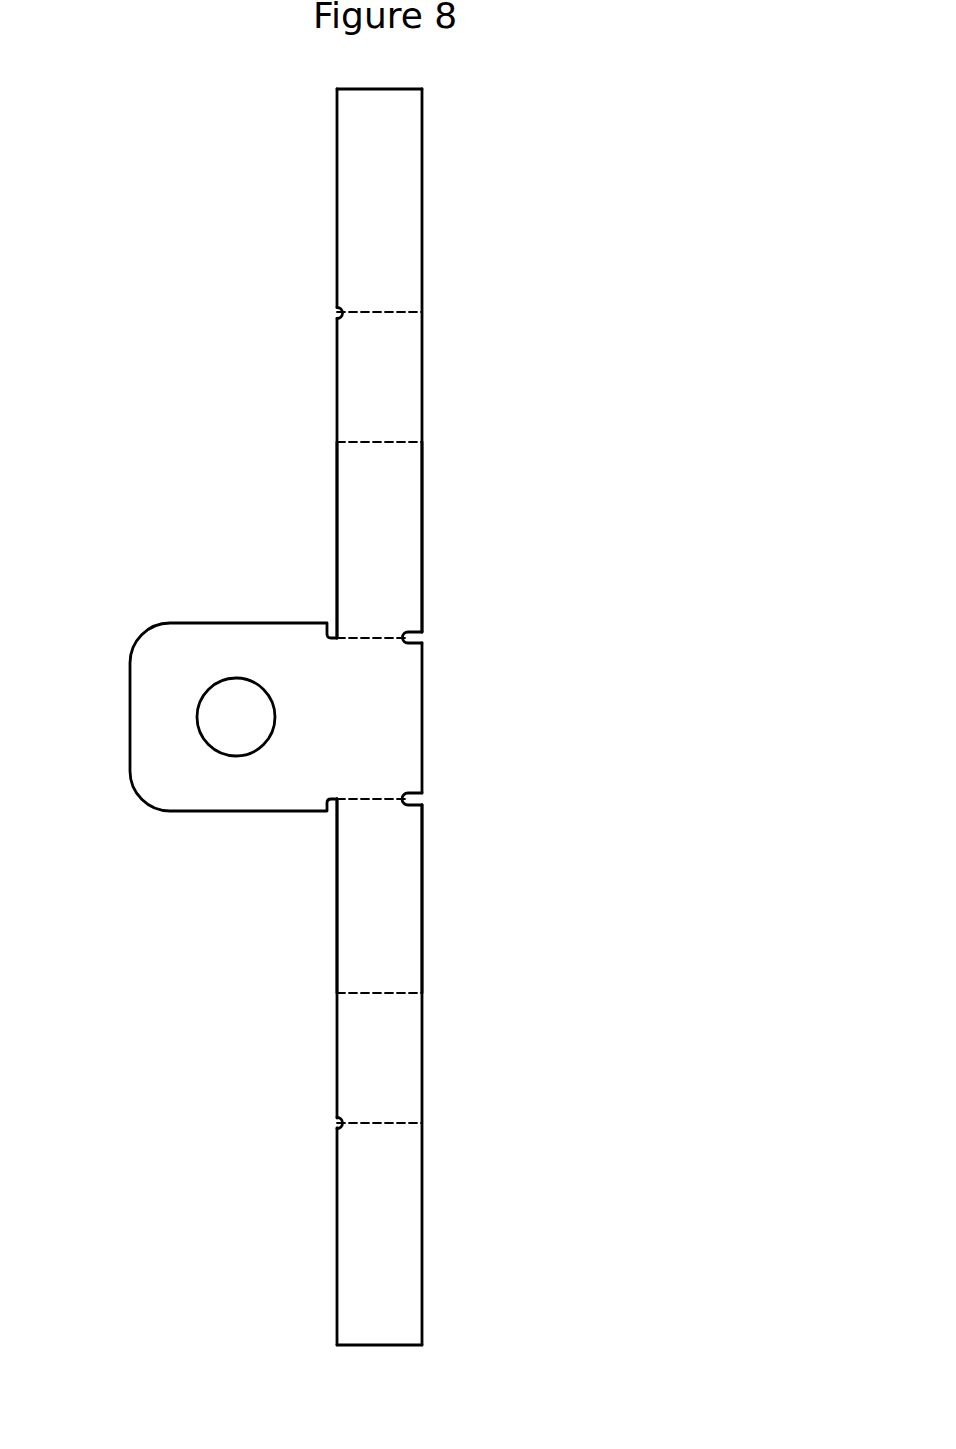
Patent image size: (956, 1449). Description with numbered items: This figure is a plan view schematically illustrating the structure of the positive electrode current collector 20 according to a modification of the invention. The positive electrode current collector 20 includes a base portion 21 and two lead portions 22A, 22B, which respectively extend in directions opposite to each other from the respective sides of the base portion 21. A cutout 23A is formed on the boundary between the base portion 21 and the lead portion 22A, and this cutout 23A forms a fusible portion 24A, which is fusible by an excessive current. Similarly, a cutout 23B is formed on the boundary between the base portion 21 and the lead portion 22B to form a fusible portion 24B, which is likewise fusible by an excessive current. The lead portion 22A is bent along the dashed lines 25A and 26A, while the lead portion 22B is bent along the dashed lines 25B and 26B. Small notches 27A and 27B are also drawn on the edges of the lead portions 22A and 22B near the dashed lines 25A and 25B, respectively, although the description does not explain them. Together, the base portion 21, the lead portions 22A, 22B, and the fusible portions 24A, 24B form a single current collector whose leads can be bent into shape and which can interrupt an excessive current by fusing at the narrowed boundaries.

The positive electrode current collector 20 is at (492, 138).
The base portion 21 is at (153, 717).
The lead portion 22A is at (402, 913).
The lead portion 22B is at (402, 528).
The cutout 23A is at (410, 799).
The cutout 23B is at (410, 638).
The fusible portion 24A is at (377, 809).
The fusible portion 24B is at (377, 629).
The dashed line 25A is at (377, 1133).
The dashed line 25B is at (375, 303).
The dashed line 26A is at (381, 1003).
The dashed line 26B is at (371, 433).
The first side notch 27A is at (340, 1123).
The second side notch 27B is at (340, 313).